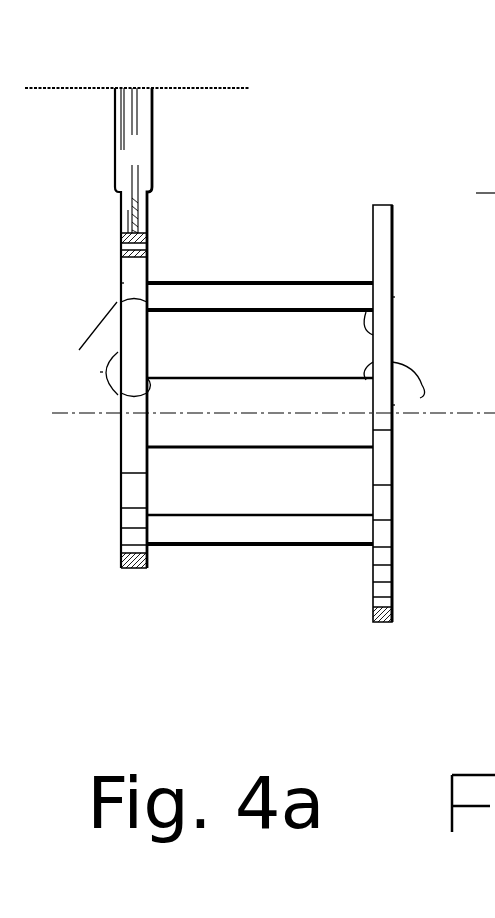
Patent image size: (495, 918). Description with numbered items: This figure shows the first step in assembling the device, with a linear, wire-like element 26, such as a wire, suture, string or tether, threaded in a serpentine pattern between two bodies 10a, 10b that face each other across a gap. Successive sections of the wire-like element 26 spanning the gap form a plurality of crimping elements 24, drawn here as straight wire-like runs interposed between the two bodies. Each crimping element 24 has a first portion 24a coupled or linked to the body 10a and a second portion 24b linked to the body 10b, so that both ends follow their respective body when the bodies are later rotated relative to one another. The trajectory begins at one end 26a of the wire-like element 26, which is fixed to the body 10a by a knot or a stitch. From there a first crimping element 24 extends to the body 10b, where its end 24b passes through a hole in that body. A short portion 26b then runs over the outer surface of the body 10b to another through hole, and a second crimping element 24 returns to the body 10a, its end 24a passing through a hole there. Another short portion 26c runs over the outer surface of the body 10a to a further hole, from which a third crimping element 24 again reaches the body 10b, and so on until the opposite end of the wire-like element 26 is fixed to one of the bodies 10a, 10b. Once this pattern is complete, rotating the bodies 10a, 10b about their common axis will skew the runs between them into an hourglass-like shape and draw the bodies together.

The body 10a is at (140, 570).
The body 10b is at (386, 625).
The crimping element 24 is at (258, 282).
The first portion of crimping element 24a is at (147, 280).
The second portion of crimping element 24b is at (378, 282).
The wire-like element 26 is at (395, 405).
The end of wire-like element 26a is at (121, 283).
The short portion of wire-like element 26b is at (394, 297).
The short portion of wire-like element 26c is at (100, 372).